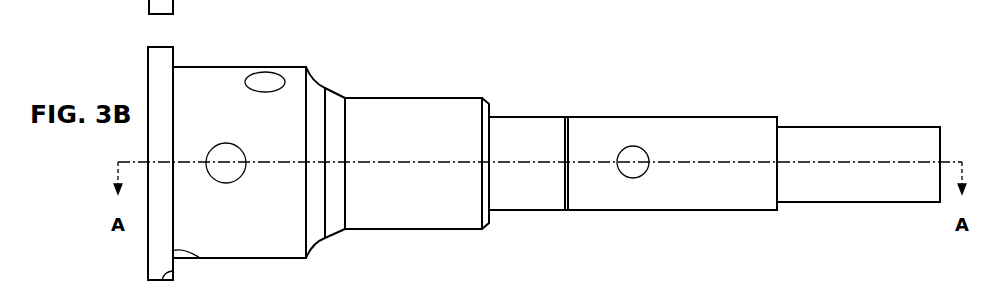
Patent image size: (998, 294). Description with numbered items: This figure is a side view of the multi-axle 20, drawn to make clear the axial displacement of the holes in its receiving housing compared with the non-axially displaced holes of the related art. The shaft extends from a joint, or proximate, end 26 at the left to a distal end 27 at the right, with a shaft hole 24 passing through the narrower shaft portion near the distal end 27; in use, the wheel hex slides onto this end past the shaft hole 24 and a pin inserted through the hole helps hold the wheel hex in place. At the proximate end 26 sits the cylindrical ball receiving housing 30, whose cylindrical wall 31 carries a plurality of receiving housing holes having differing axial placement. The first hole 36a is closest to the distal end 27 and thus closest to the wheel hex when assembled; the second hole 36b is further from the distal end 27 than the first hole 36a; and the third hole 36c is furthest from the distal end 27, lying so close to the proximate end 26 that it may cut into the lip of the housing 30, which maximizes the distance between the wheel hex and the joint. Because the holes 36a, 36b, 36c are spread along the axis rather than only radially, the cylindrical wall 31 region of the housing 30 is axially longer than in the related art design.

The multi-axle 20 is at (760, 31).
The shaft hole 24 is at (630, 152).
The joint (proximate) end 26 is at (144, 98).
The distal end 27 is at (920, 181).
The ball receiving housing 30 is at (221, 7).
The cylindrical wall 31 is at (220, 77).
The first hole 36a is at (265, 83).
The second hole 36b is at (232, 173).
The third hole 36c is at (172, 257).